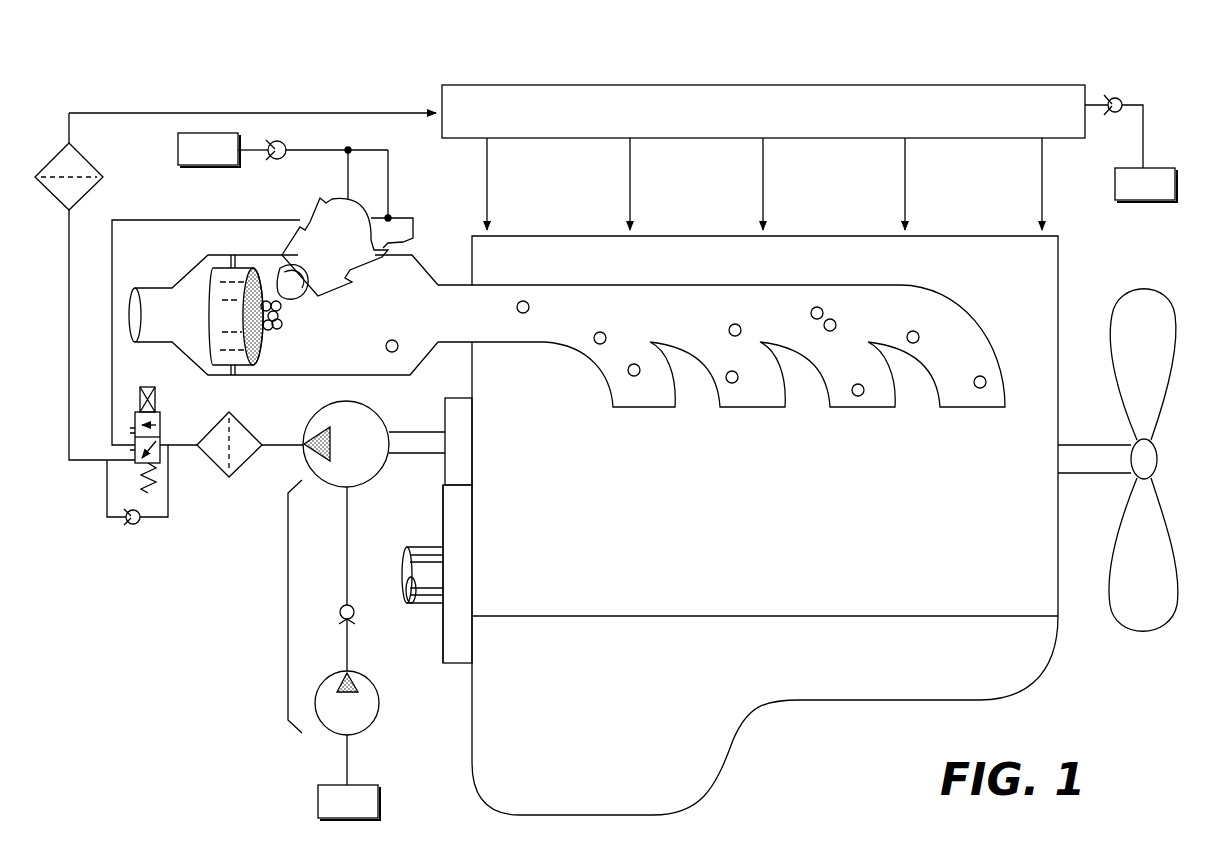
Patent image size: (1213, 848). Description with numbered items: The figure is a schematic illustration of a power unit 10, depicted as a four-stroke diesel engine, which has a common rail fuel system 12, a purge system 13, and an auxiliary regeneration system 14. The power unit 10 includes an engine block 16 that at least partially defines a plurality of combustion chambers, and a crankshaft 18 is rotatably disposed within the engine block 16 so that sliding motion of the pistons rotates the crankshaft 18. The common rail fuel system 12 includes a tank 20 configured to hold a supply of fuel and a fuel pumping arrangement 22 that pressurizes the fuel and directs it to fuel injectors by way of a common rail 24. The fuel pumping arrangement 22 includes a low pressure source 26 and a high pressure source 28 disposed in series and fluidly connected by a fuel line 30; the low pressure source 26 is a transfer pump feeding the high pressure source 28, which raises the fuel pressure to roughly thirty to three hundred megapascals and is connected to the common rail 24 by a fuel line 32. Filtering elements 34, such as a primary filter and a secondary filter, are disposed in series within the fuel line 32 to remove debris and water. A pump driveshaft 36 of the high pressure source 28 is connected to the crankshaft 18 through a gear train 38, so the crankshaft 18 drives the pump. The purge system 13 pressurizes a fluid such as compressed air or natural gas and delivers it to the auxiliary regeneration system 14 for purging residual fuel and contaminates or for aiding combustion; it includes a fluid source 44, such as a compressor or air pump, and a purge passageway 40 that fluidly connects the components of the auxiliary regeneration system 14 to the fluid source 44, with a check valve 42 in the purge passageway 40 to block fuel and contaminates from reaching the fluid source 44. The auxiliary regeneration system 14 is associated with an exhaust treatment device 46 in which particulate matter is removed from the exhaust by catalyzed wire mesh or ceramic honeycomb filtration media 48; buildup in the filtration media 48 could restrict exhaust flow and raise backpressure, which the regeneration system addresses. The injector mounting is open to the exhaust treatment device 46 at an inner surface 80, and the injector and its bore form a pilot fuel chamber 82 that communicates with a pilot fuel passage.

The power unit 10 is at (1093, 56).
The common rail fuel system 12 is at (324, 82).
The purge system 13 is at (181, 176).
The auxiliary regeneration system 14 is at (412, 202).
The engine block 16 is at (761, 499).
The crankshaft 18 is at (433, 605).
The tank 20 is at (1145, 201).
The fuel pumping arrangement 22 is at (288, 607).
The common rail 24 is at (753, 124).
The low pressure source 26 is at (338, 718).
The high pressure source 28 is at (347, 455).
The fuel line 30 is at (347, 560).
The fuel line 32 is at (70, 283).
The filtering elements 34 is at (37, 174).
The pump driveshaft 36 is at (412, 455).
The gear train 38 is at (443, 530).
The purge passageway 40 is at (250, 153).
The check valve 42 is at (281, 162).
The fluid source 44 is at (177, 149).
The exhaust treatment device 46 is at (434, 231).
The filtration media 48 is at (213, 314).
The inner surface 80 is at (421, 315).
The pilot fuel chamber 82 is at (112, 372).